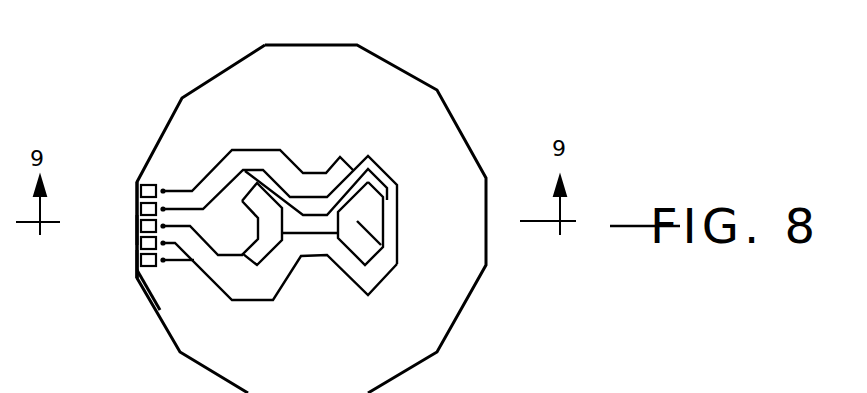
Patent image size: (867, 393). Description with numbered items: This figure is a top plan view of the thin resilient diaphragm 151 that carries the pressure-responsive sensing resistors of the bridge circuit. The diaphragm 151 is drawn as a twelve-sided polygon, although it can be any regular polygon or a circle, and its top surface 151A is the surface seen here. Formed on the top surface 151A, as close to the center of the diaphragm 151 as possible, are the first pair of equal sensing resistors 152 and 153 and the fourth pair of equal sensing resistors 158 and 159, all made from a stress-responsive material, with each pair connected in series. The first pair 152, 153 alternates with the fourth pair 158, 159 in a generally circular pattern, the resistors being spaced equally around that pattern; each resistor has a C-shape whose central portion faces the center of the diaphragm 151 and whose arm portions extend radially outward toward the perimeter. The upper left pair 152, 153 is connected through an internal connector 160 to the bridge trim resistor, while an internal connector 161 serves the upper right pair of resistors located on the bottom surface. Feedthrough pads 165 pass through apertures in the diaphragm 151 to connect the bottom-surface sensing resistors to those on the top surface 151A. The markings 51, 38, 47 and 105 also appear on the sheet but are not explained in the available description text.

The resilient diaphragm 151 is at (408, 100).
The top surface 151A is at (456, 156).
The sensing resistor 152 is at (312, 178).
The sensing resistor 153 is at (308, 263).
The sensing resistor 158 is at (352, 223).
The sensing resistor 159 is at (268, 222).
The internal connector 160 is at (143, 185).
The internal connector 161 is at (143, 278).
The feedthrough pads 165 is at (170, 188).
The mounting edge 51 is at (136, 198).
The housing wall 38 is at (134, 230).
The housing wall 47 is at (136, 262).
The sensor assembly 105 is at (816, 380).